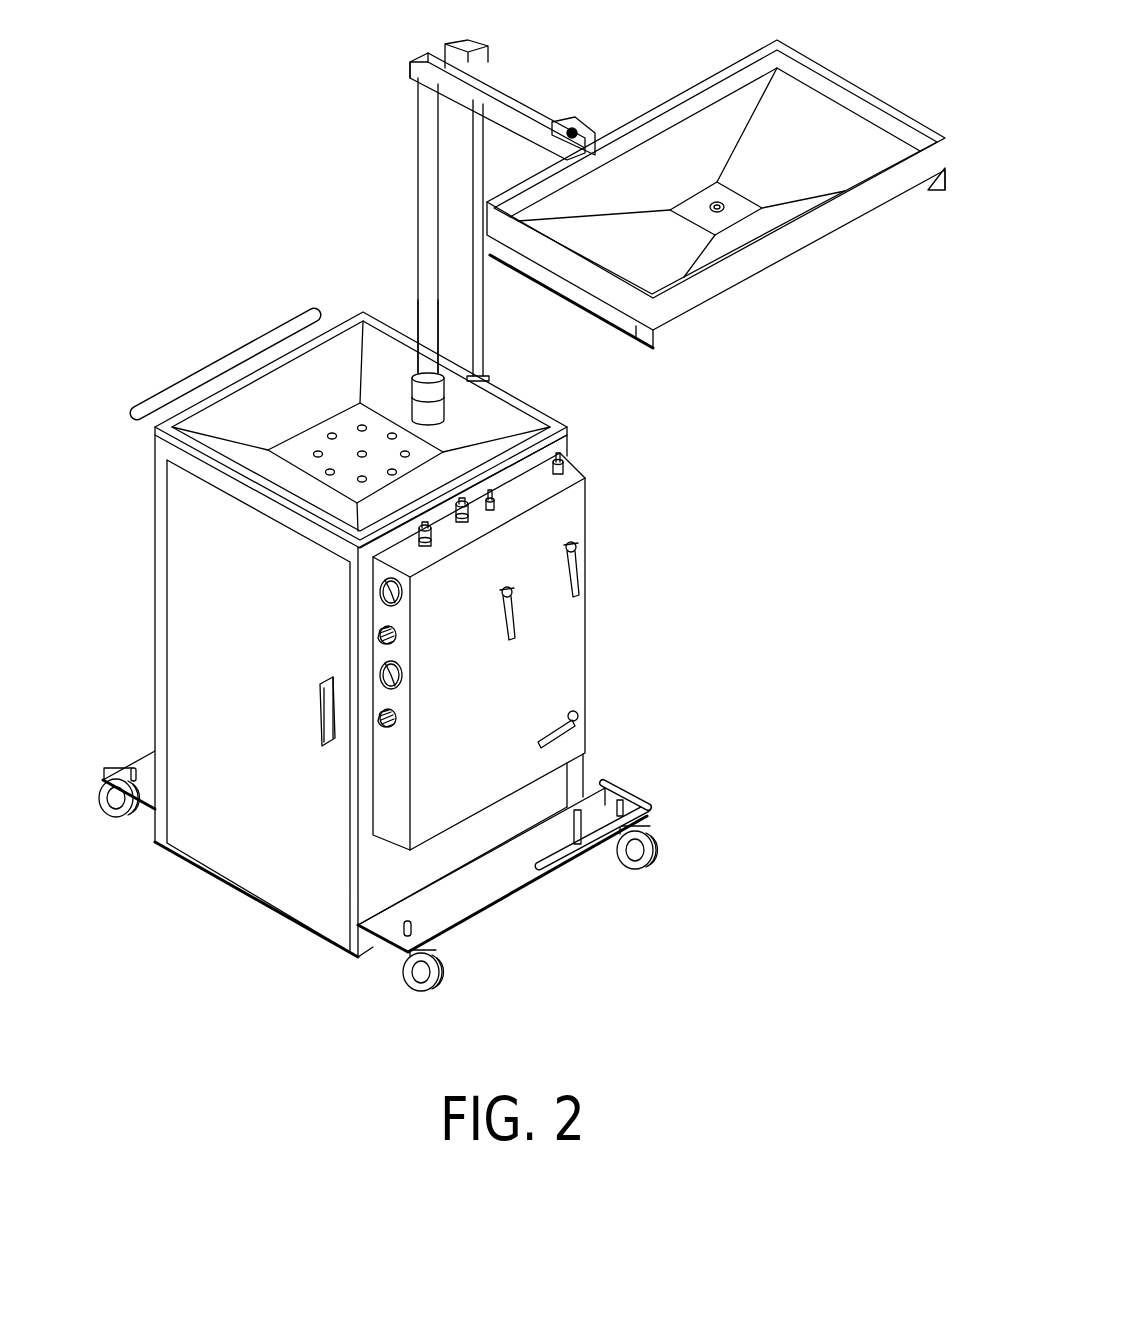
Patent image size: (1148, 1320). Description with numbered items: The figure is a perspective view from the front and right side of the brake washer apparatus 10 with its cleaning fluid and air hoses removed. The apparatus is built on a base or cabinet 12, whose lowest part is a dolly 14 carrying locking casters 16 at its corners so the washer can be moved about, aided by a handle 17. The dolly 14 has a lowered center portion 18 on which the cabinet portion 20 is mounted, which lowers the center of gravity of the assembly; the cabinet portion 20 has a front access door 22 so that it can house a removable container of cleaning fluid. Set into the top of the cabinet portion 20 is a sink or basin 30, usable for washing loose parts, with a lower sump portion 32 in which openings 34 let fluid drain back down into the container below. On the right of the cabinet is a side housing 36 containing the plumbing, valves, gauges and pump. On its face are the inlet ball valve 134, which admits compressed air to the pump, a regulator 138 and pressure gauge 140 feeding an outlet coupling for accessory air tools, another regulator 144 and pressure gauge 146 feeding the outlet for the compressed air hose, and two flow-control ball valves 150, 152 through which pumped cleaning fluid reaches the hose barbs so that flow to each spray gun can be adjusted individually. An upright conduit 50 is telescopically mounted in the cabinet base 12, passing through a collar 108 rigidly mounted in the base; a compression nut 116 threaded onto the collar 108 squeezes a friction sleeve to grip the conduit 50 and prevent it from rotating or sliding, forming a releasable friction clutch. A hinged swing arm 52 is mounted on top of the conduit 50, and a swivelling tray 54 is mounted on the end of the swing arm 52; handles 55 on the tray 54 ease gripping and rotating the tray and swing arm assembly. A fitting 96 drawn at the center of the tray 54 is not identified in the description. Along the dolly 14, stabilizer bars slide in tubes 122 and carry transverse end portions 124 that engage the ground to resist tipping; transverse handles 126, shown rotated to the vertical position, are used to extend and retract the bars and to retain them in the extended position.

The brake washer apparatus 10 is at (167, 244).
The base cabinet 12 is at (152, 515).
The lower dolly 14 is at (462, 897).
The locking casters 16 is at (122, 820).
The handle 17 is at (194, 374).
The lowered center portion 18 is at (243, 898).
The cabinet portion 20 is at (157, 583).
The front access door 22 is at (328, 902).
The sink or basin 30 is at (493, 430).
The lower sump portion 32 is at (415, 447).
The openings 34 is at (362, 426).
The side housing 36 is at (588, 590).
The upright conduit 50 is at (432, 184).
The swing arm 52 is at (478, 92).
The tray 54 is at (735, 262).
The handles 55 is at (932, 180).
The drain 96 is at (710, 214).
The collar 108 is at (428, 340).
The compression nut 116 is at (479, 338).
The tubes 122 is at (552, 866).
The transverse end portions 124 is at (608, 789).
The transverse handles 126 is at (590, 852).
The inlet ball valve 134 is at (578, 715).
The regulator 138 is at (394, 721).
The pressure gauge 140 is at (402, 676).
The regulator 144 is at (394, 634).
The pressure gauge 146 is at (405, 595).
The flow-control ball valve 150 is at (505, 590).
The flow-control ball valve 152 is at (577, 548).